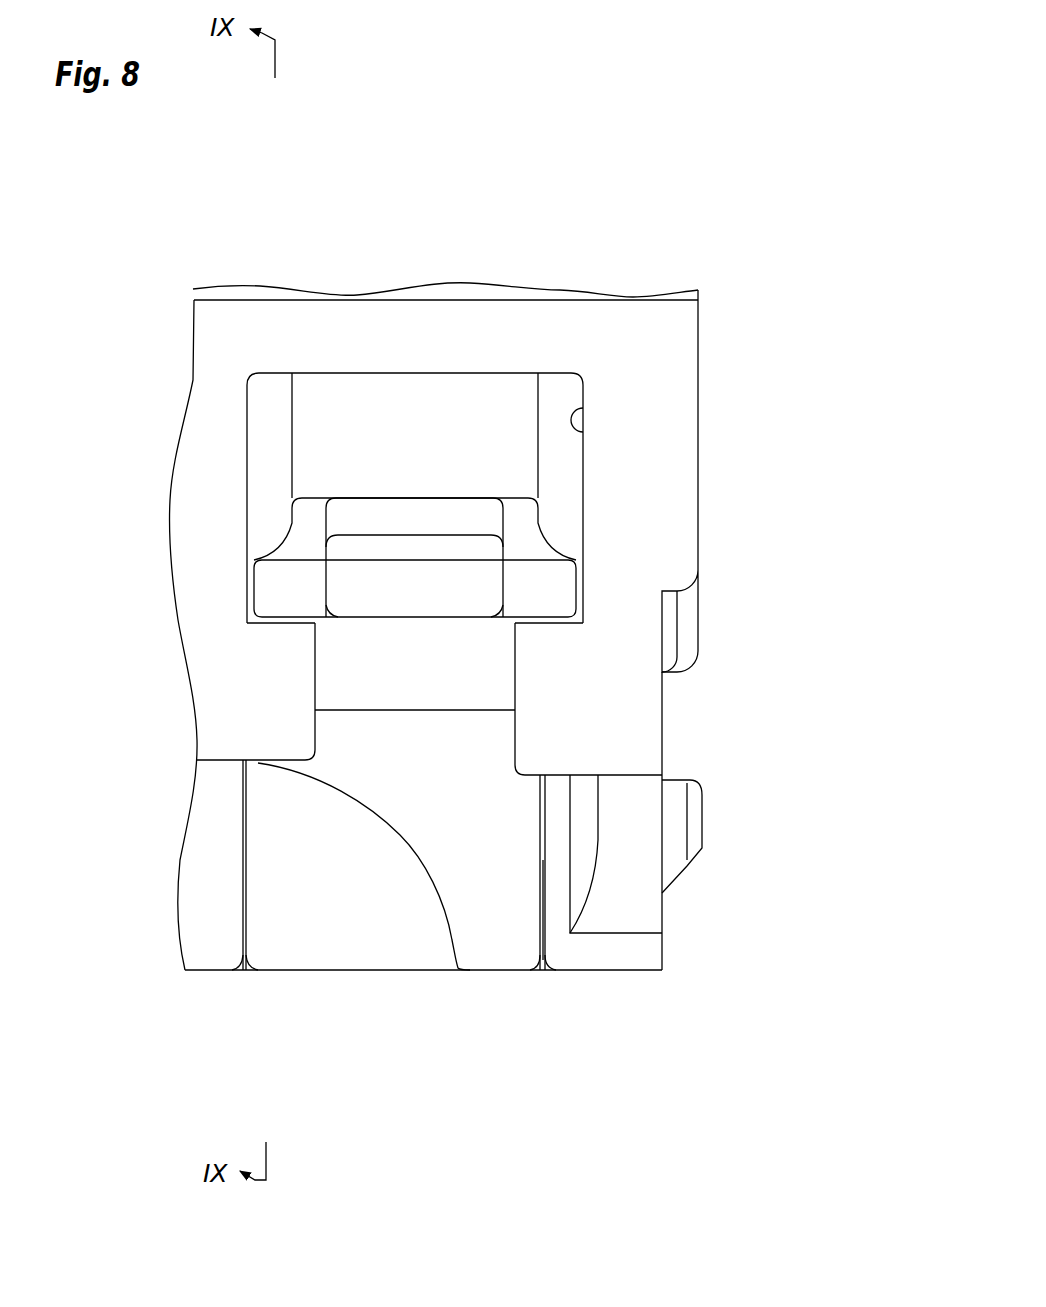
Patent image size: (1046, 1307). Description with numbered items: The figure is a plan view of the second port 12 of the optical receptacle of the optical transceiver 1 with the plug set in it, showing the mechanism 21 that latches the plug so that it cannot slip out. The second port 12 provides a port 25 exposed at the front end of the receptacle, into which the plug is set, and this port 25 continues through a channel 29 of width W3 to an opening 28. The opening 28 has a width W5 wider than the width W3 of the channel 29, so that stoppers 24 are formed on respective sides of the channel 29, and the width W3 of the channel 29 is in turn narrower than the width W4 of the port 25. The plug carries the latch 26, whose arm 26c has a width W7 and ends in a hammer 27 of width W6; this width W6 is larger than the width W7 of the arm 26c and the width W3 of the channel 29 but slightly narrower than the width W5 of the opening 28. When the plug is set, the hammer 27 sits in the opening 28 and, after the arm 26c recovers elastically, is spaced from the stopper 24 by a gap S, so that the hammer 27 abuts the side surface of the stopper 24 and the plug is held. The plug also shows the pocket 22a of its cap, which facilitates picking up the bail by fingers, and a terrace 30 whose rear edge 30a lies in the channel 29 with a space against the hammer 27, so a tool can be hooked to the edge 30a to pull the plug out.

The optical transceiver 1 is at (772, 250).
The second port 12 is at (547, 975).
The mechanism 21 is at (775, 417).
The pocket 22a is at (293, 860).
The stopper 24 is at (283, 673).
The port 25 is at (247, 938).
The latch 26 is at (548, 468).
The arm 26c is at (390, 443).
The hammer 27 is at (568, 589).
The opening 28 is at (585, 434).
The channel 29 is at (515, 983).
The terrace 30 is at (455, 840).
The rear edge 30a is at (420, 708).
The width of channel W3 is at (317, 760).
The width of port W4 is at (541, 970).
The width of opening W5 is at (583, 373).
The width of hammer W6 is at (576, 560).
The width of arm W7 is at (538, 373).
The gap S is at (585, 618).